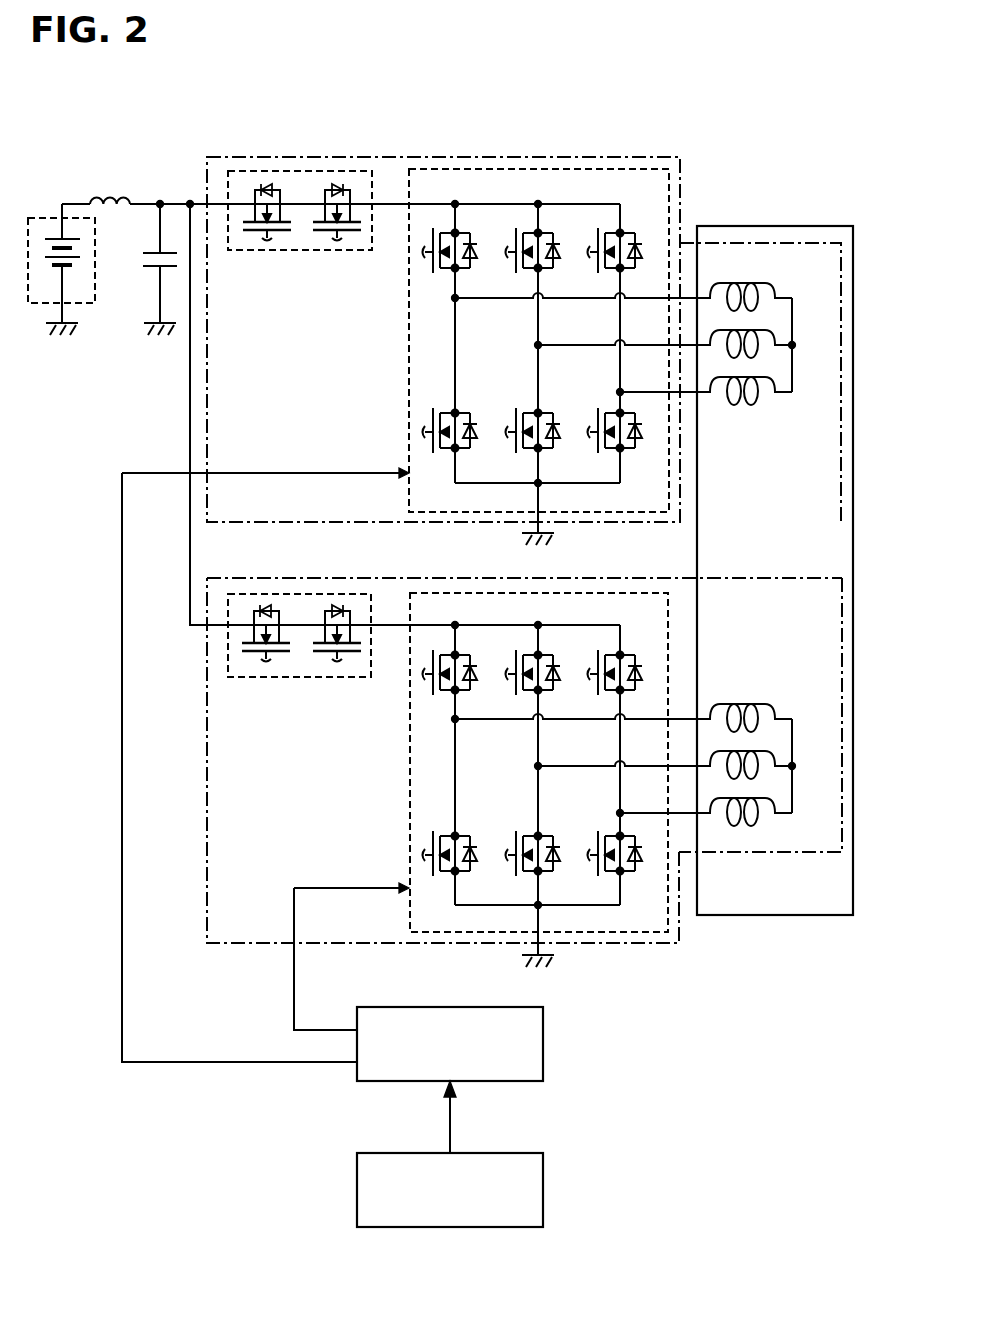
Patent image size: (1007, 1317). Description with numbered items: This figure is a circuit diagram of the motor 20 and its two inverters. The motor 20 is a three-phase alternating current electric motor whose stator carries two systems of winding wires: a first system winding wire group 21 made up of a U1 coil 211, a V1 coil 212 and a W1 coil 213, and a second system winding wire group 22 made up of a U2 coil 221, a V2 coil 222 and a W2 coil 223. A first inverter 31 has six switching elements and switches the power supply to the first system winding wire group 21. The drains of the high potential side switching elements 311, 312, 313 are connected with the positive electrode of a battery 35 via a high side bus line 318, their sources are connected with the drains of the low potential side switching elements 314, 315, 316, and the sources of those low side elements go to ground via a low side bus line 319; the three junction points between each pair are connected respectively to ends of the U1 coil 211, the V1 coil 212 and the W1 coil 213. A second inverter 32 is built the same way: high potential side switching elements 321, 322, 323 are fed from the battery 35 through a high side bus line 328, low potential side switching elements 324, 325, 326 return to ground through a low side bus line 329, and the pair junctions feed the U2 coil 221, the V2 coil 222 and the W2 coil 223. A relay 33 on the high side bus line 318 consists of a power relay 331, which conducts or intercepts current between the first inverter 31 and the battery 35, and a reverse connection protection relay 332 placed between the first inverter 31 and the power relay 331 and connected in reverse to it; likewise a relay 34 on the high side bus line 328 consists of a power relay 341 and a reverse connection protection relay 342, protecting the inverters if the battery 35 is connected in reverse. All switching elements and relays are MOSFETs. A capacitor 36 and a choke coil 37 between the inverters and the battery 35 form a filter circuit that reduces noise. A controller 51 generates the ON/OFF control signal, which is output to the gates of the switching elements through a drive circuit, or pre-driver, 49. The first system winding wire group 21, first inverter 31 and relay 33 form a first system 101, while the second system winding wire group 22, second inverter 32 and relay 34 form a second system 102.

The motor 20 is at (800, 226).
The first system winding wire group 21 is at (760, 382).
The second system winding wire group 22 is at (760, 715).
The first inverter 31 is at (418, 168).
The second inverter 32 is at (408, 826).
The relay 33 is at (299, 221).
The relay 34 is at (299, 643).
The battery 35 is at (45, 218).
The capacitor 36 is at (152, 266).
The choke coil 37 is at (112, 196).
The drive circuit (pre-driver) 49 is at (545, 1040).
The controller 51 is at (545, 1190).
The first system 101 is at (210, 154).
The second system 102 is at (212, 948).
The U1 coil 211 is at (758, 284).
The V1 coil 212 is at (775, 331).
The W1 coil 213 is at (778, 378).
The U2 coil 221 is at (760, 704).
The V2 coil 222 is at (775, 750).
The W2 coil 223 is at (778, 798).
The high potential side switching element 311 is at (471, 260).
The high potential side switching element 312 is at (555, 260).
The high potential side switching element 313 is at (621, 232).
The low potential side switching element 314 is at (466, 411).
The low potential side switching element 315 is at (550, 411).
The low potential side switching element 316 is at (628, 453).
The high side bus line 318 is at (490, 202).
The low side bus line 319 is at (590, 486).
The high potential side switching element 321 is at (448, 702).
The high potential side switching element 322 is at (555, 680).
The high potential side switching element 323 is at (626, 655).
The low potential side switching element 324 is at (464, 834).
The low potential side switching element 325 is at (550, 834).
The low potential side switching element 326 is at (628, 874).
The high side bus line 328 is at (487, 623).
The low side bus line 329 is at (590, 907).
The power relay 331 is at (270, 185).
The reverse connection protection relay 332 is at (338, 185).
The power relay 341 is at (262, 606).
The reverse connection protection relay 342 is at (337, 606).